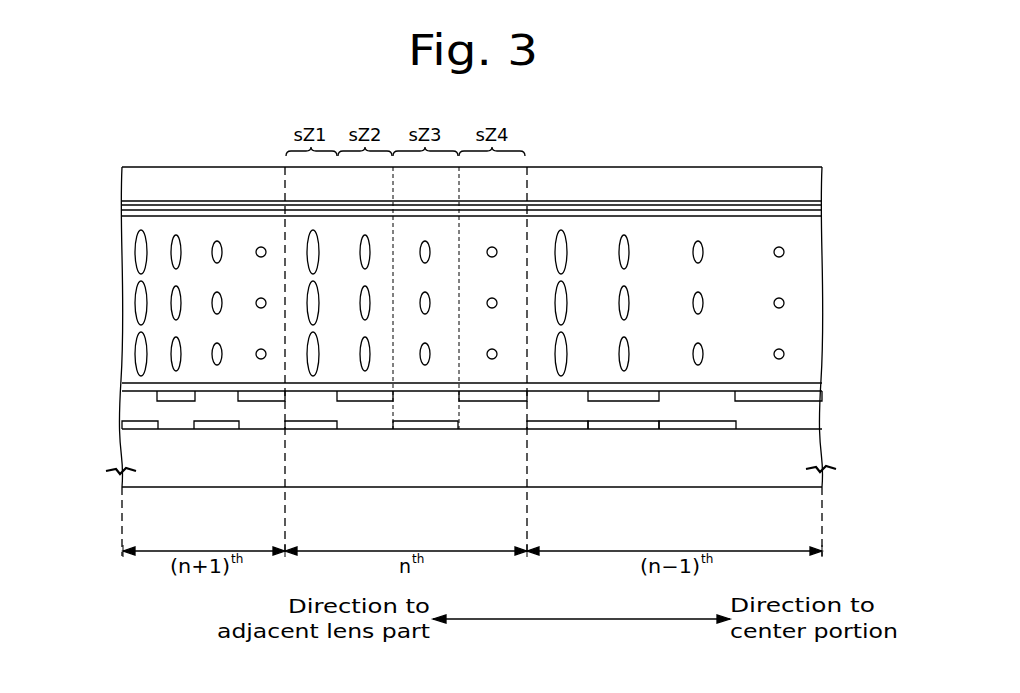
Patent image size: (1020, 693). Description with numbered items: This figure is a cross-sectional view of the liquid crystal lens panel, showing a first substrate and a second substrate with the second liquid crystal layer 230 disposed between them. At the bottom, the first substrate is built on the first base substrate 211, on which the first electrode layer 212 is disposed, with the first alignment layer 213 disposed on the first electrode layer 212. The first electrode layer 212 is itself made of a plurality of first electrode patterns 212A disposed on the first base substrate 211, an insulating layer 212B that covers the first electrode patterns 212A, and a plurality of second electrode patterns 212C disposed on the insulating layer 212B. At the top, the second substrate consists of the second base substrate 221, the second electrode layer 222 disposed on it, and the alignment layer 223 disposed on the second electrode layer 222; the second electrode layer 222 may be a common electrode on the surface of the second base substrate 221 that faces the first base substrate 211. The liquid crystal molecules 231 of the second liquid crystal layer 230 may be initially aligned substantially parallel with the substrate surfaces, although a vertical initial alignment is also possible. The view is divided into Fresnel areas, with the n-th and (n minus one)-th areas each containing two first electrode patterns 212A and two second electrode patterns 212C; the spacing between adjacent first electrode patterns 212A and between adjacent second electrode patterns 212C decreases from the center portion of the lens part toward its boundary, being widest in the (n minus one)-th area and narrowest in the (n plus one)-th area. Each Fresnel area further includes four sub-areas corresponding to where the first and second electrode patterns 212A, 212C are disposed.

The first base substrate 211 is at (132, 452).
The first electrode layer 212 is at (833, 390).
The first electrode patterns 212A is at (218, 427).
The insulating layer 212B is at (622, 420).
The second electrode patterns 212C is at (366, 397).
The first alignment layer 213 is at (132, 387).
The second base substrate 221 is at (132, 182).
The second electrode layer 222 is at (130, 204).
The alignment layer 223 is at (131, 212).
The second liquid crystal layer 230 is at (833, 220).
The liquid crystal molecules 231 is at (310, 244).